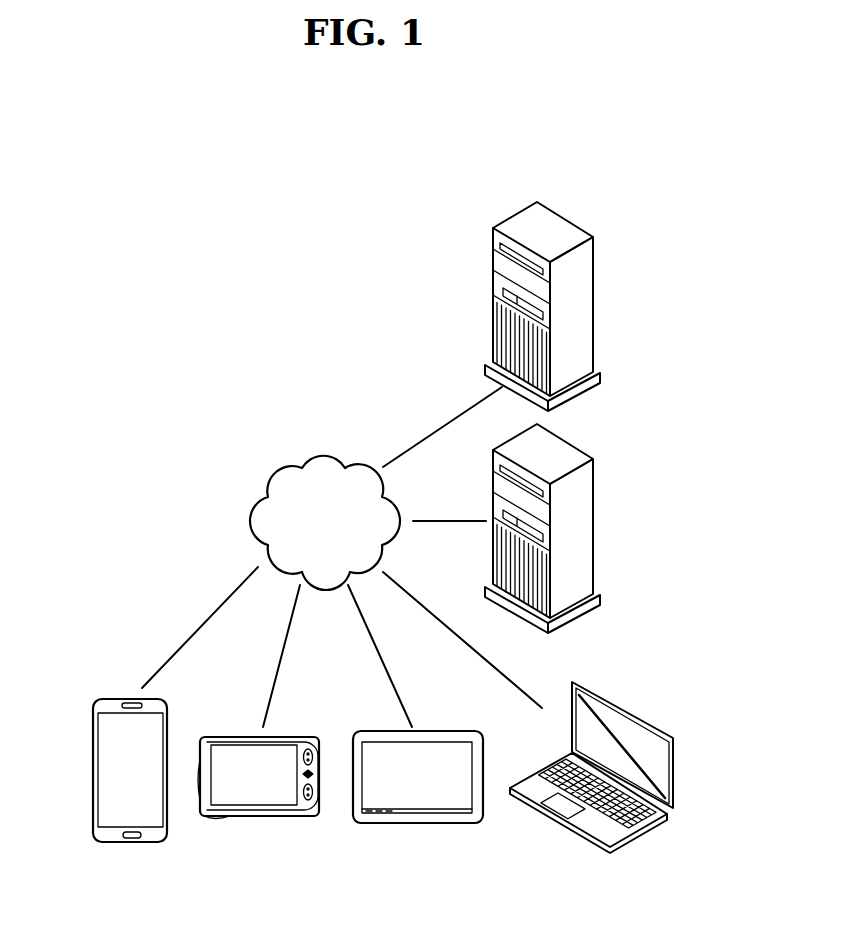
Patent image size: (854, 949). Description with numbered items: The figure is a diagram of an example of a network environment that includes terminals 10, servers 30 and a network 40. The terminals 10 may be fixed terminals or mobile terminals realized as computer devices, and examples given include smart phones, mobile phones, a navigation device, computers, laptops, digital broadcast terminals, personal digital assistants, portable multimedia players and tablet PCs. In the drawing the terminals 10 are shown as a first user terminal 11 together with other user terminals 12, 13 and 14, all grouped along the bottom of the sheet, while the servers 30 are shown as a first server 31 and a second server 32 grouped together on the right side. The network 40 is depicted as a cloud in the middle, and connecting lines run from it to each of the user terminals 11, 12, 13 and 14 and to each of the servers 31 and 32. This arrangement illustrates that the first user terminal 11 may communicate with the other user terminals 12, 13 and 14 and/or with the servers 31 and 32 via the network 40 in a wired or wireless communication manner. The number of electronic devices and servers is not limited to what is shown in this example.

The terminals 10 is at (383, 812).
The first user terminal 11 is at (130, 842).
The user terminal 12 is at (258, 816).
The user terminal 13 is at (413, 823).
The user terminal 14 is at (591, 789).
The servers 30 is at (594, 417).
The server 31 is at (569, 528).
The server 32 is at (595, 300).
The network 40 is at (326, 455).